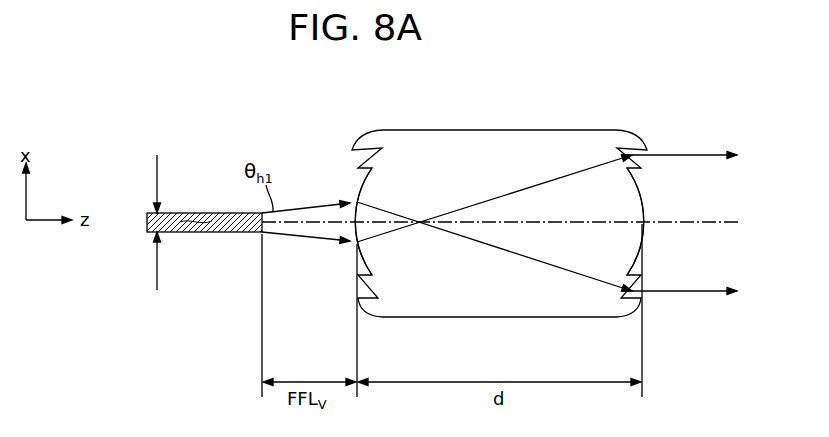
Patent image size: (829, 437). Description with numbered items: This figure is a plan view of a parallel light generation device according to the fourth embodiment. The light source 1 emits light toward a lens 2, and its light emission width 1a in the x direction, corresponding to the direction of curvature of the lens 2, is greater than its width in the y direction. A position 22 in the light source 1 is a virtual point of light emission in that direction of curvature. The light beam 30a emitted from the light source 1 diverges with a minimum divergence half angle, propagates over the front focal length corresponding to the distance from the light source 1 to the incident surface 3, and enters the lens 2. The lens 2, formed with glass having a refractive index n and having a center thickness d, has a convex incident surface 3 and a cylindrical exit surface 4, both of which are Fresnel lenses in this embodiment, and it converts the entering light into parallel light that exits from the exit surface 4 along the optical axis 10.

The light source 1 is at (210, 212).
The light emission width 1a is at (141, 222).
The lens 2 is at (505, 130).
The incident surface 3 is at (358, 149).
The exit surface 4 is at (640, 181).
The optical axis 10 is at (718, 221).
The position 22 is at (185, 233).
The light beam 30a is at (321, 206).